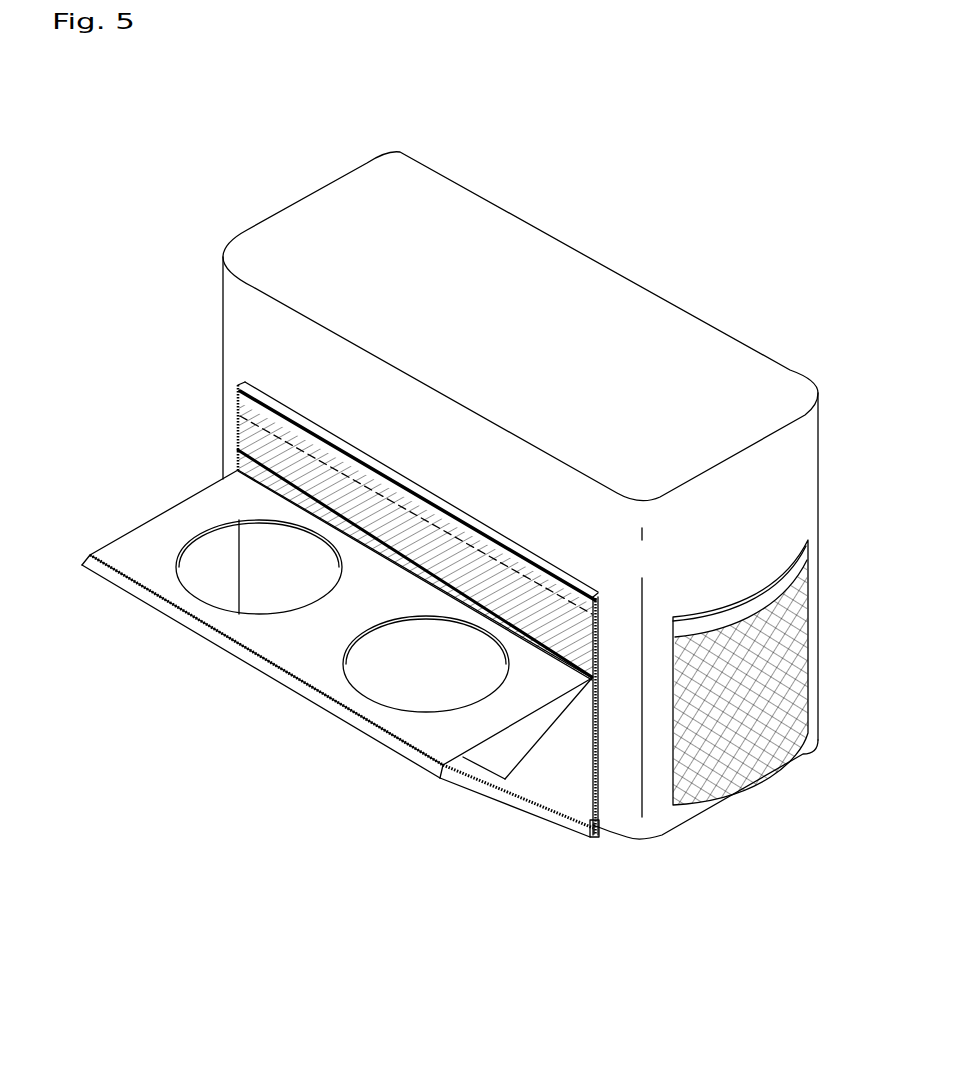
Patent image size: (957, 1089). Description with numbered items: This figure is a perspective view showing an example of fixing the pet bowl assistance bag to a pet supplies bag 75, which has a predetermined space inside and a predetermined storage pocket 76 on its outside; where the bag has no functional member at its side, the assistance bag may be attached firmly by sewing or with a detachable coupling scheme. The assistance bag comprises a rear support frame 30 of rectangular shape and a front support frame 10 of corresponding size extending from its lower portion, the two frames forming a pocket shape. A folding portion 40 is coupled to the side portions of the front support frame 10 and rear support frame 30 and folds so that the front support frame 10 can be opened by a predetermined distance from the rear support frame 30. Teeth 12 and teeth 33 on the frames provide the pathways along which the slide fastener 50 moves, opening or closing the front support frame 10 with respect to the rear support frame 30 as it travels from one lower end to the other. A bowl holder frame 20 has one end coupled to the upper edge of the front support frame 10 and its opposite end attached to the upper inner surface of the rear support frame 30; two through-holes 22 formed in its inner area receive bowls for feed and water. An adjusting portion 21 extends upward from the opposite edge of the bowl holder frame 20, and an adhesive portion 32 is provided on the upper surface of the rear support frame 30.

The front support frame 10 is at (249, 672).
The teeth 12 is at (520, 797).
The bowl holder frame 20 is at (128, 518).
The adjusting portion 21 is at (238, 452).
The through-holes 22 is at (218, 562).
The rear support frame 30 is at (233, 412).
The adhesive portion 32 is at (278, 430).
The teeth 33 is at (598, 735).
The folding portion 40 is at (568, 767).
The slide fastener (zipper) 50 is at (590, 838).
The pet supplies bag 75 is at (737, 372).
The storage pocket 76 is at (790, 658).